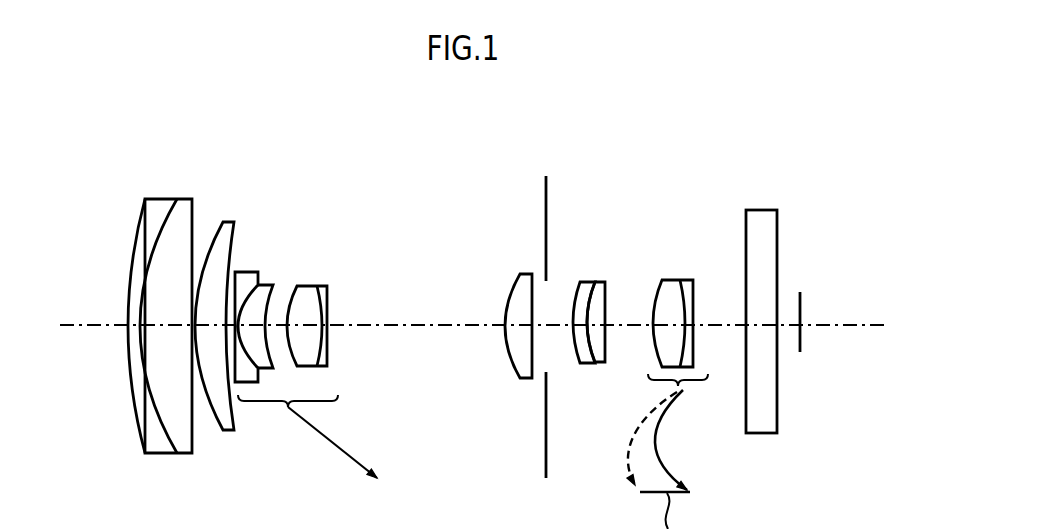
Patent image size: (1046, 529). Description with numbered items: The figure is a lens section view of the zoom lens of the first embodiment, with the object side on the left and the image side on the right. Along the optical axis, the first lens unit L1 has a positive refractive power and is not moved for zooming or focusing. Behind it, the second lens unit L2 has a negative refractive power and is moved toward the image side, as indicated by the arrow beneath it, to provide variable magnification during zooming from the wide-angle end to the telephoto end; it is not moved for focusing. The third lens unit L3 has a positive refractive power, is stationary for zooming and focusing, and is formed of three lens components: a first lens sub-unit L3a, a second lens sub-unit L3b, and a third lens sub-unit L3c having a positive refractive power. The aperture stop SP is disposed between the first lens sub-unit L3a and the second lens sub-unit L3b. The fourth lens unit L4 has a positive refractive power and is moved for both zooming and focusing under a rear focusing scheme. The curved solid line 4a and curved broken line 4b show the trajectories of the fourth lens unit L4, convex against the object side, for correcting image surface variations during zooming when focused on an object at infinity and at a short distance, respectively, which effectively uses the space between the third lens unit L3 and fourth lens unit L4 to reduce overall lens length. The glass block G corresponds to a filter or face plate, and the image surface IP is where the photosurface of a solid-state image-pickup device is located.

The first lens unit L1 is at (117, 183).
The second lens unit L2 is at (238, 256).
The third lens unit L3 is at (483, 127).
The first lens sub-unit L3a is at (520, 274).
The second lens sub-unit L3b is at (581, 282).
The third lens sub-unit L3c is at (598, 282).
The fourth lens unit L4 is at (647, 274).
The aperture stop SP is at (547, 178).
The glass block G is at (762, 210).
The image surface IP is at (800, 295).
The curved solid line 4a is at (655, 457).
The curved broken line 4b is at (630, 435).